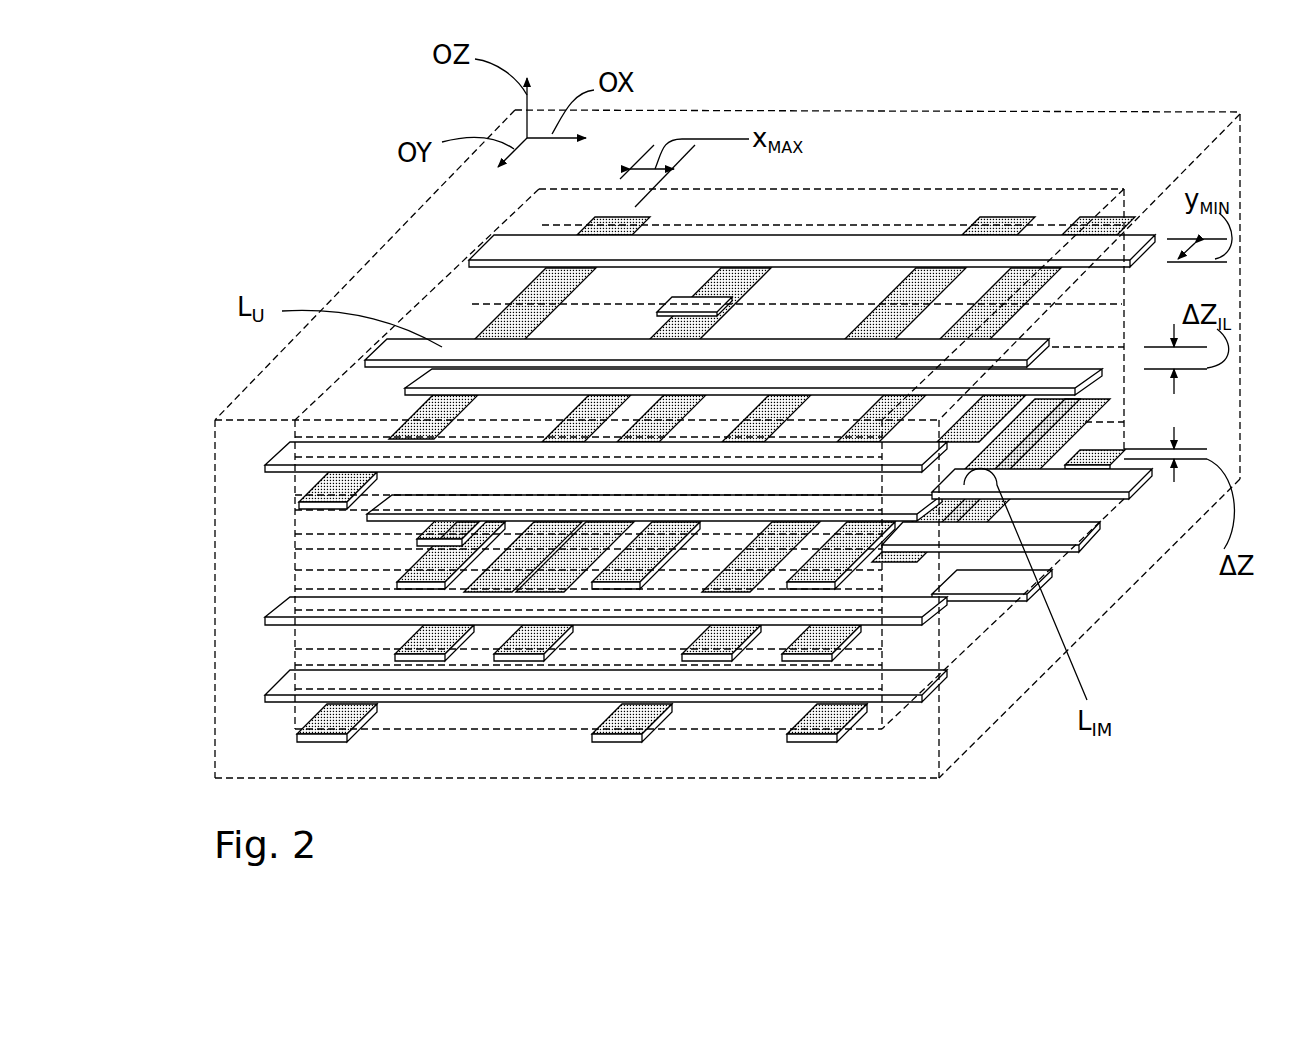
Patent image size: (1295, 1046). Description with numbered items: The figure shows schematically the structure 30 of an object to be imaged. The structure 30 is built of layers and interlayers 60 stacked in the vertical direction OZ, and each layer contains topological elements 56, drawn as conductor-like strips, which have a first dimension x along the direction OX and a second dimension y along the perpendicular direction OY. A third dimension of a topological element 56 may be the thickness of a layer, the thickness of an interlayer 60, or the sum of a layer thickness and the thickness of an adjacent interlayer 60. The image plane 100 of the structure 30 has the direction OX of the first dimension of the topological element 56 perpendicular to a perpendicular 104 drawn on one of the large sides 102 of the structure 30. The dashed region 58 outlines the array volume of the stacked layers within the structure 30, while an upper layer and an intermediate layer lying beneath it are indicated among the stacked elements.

The structure 30 is at (342, 154).
The image plane 100 is at (642, 127).
The perpendicular 104 is at (262, 372).
The large side 102 is at (265, 425).
The memory array volume 58 is at (913, 187).
The topological element 56 is at (760, 243).
The interlayer 60 is at (297, 492).